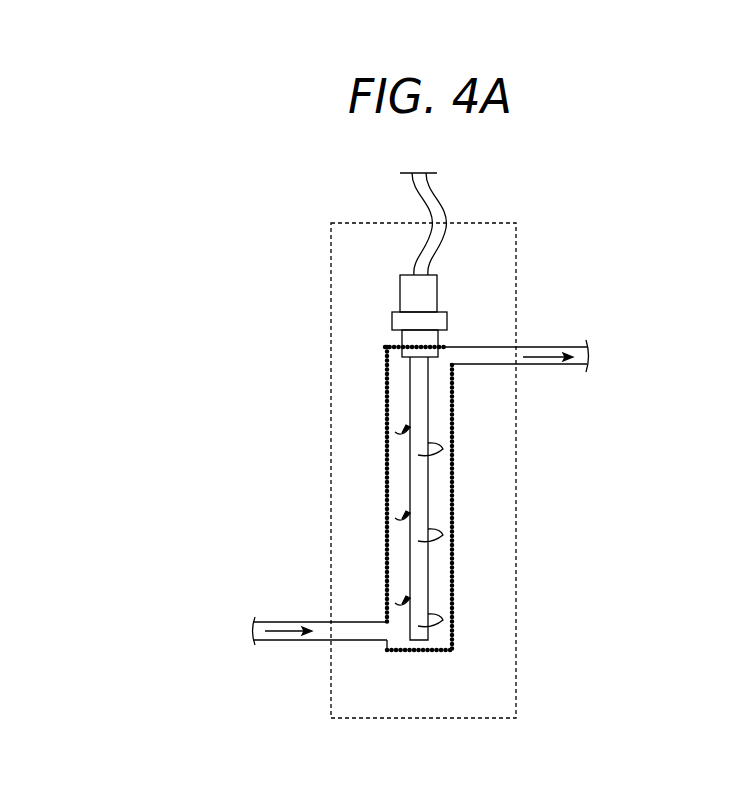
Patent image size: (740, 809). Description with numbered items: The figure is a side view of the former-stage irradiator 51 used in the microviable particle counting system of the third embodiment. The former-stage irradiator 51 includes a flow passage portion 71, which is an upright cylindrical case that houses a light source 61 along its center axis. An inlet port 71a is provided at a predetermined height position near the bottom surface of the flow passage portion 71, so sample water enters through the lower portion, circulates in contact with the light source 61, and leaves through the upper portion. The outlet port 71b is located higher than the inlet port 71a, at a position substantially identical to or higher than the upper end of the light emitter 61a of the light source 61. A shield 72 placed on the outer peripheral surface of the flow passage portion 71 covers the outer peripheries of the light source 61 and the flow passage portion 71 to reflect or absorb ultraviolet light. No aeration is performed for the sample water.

The former-stage irradiator 51 is at (483, 223).
The light source 61 is at (437, 287).
The light emitter 61a is at (417, 542).
The flow passage portion 71 is at (385, 462).
The inlet port 71a is at (380, 618).
The outlet port 71b is at (465, 347).
The shield 72 is at (455, 428).